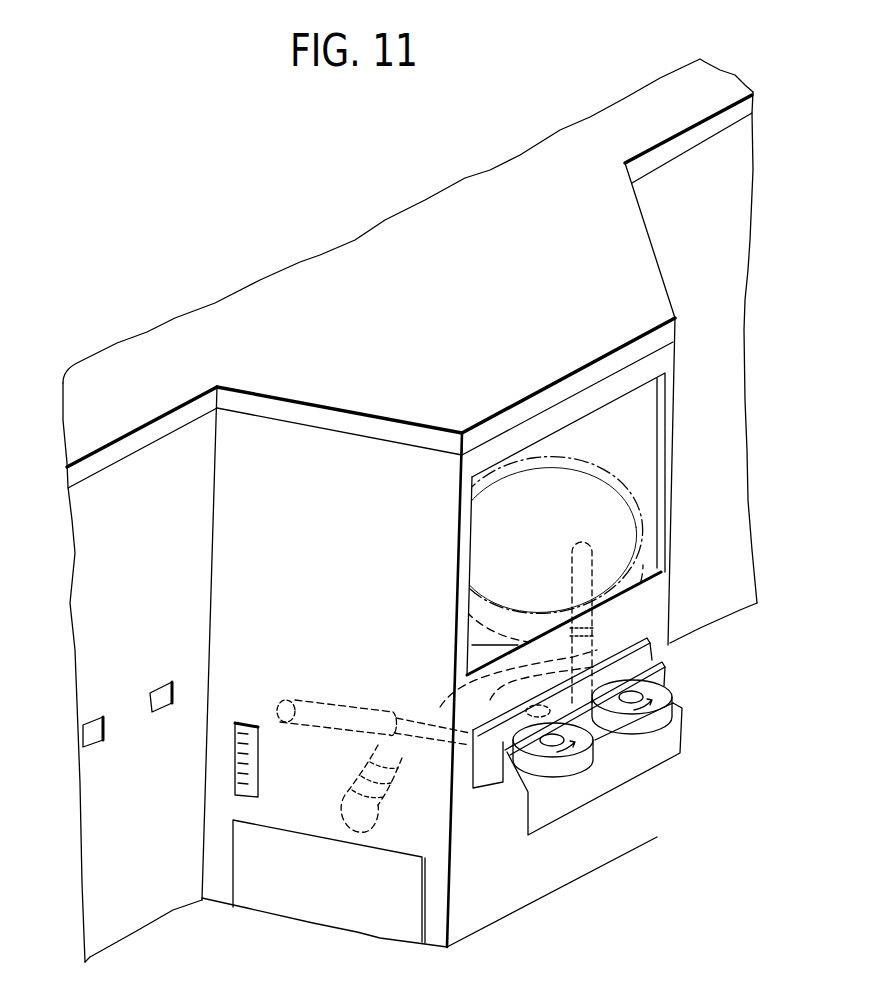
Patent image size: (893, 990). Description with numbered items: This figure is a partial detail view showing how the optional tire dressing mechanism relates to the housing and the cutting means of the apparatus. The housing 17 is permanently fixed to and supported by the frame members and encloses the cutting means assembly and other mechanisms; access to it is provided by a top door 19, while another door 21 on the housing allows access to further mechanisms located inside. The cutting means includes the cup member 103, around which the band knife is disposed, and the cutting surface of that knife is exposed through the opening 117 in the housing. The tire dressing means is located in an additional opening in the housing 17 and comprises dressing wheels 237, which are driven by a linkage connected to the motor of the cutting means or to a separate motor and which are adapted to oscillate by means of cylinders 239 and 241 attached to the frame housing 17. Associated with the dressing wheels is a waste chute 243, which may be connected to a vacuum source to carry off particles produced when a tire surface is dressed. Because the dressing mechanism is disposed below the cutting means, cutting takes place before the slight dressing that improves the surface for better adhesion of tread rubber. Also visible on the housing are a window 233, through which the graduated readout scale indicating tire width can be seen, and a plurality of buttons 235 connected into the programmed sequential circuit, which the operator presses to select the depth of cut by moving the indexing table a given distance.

The top door 19 is at (147, 330).
The housing 17 is at (668, 470).
The door 21 is at (313, 917).
The opening 117 is at (662, 404).
The cup member 103 is at (563, 462).
The cylinder 241 is at (570, 590).
The dressing wheels 237 is at (561, 736).
The cylinder 239 is at (332, 702).
The waste chute 243 is at (362, 784).
The window 233 is at (258, 741).
The buttons 235 is at (148, 733).